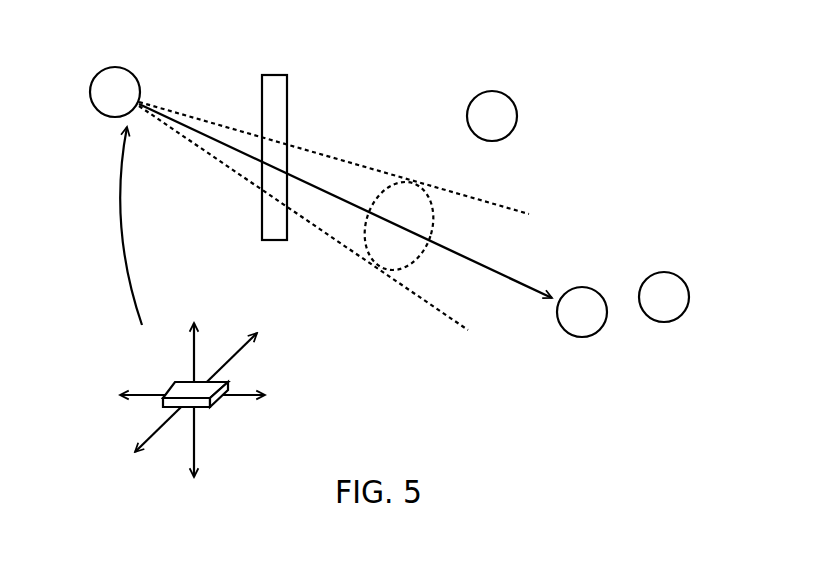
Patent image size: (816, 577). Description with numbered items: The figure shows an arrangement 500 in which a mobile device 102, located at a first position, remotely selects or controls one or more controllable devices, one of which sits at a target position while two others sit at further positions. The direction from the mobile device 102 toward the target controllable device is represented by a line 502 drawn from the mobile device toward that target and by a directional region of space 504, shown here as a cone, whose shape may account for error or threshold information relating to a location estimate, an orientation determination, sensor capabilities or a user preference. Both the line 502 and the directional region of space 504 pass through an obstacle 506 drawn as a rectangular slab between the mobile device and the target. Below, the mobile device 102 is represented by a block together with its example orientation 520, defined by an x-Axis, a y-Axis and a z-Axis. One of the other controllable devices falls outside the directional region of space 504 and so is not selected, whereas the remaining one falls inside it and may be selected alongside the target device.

The arrangement 500 is at (452, 62).
The line 502 is at (508, 277).
The directional region of space 504 is at (337, 162).
The obstacle 506 is at (274, 108).
The orientation 520 is at (125, 343).
The mobile device 102 is at (200, 408).